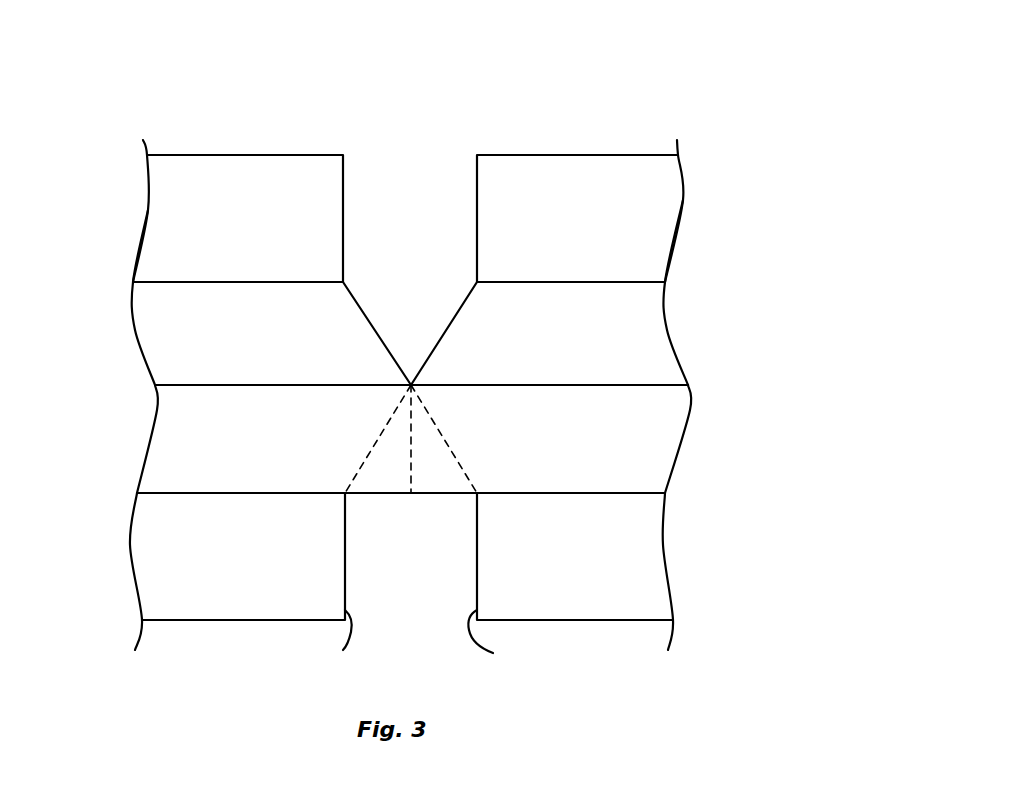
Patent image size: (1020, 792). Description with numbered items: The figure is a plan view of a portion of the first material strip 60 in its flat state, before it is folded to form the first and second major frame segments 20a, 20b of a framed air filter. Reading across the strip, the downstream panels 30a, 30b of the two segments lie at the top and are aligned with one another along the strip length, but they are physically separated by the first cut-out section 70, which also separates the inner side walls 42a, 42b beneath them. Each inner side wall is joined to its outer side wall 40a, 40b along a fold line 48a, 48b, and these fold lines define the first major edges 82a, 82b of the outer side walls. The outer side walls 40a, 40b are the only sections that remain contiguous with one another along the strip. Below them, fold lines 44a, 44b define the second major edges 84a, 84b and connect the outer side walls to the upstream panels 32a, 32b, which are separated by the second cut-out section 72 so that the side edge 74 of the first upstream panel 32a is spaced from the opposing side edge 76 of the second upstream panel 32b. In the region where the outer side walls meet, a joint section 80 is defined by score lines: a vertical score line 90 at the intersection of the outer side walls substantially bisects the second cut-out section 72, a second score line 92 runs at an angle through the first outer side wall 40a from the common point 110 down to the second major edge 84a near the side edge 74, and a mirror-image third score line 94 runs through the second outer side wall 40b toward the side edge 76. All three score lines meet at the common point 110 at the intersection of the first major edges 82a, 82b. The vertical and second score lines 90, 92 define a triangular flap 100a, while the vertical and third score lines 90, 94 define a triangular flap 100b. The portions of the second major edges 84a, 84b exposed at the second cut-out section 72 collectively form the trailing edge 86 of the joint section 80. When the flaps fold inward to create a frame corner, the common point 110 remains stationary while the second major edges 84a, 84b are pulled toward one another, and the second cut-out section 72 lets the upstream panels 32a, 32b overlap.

The first material strip 60 is at (673, 62).
The first major frame segment 20a is at (247, 142).
The second major frame segment 20b is at (585, 142).
The downstream panel 30a is at (157, 202).
The downstream panel 30b is at (678, 202).
The first cut-out section 70 is at (445, 158).
The inner side wall 42a is at (148, 322).
The inner side wall 42b is at (670, 322).
The fold line 48a is at (175, 380).
The fold line 48b is at (655, 380).
The first major edge 82a is at (260, 385).
The first major edge 82b is at (570, 385).
The common point 110 is at (411, 385).
The outer side wall 40a is at (178, 403).
The outer side wall 40b is at (682, 412).
The fold line 44a is at (178, 492).
The fold line 44b is at (652, 490).
The second score line 92 is at (388, 422).
The third score line 94 is at (435, 422).
The vertical score line 90 is at (412, 450).
The triangular flap 100a is at (370, 472).
The triangular flap 100b is at (458, 480).
The upstream panel 32a is at (150, 563).
The upstream panel 32b is at (660, 562).
The second major edge 84a is at (248, 495).
The second major edge 84b is at (567, 495).
The side edge 74 is at (339, 644).
The side edge 76 is at (495, 639).
The joint section 80 is at (408, 498).
The trailing edge 86 is at (437, 495).
The second cut-out section 72 is at (428, 610).